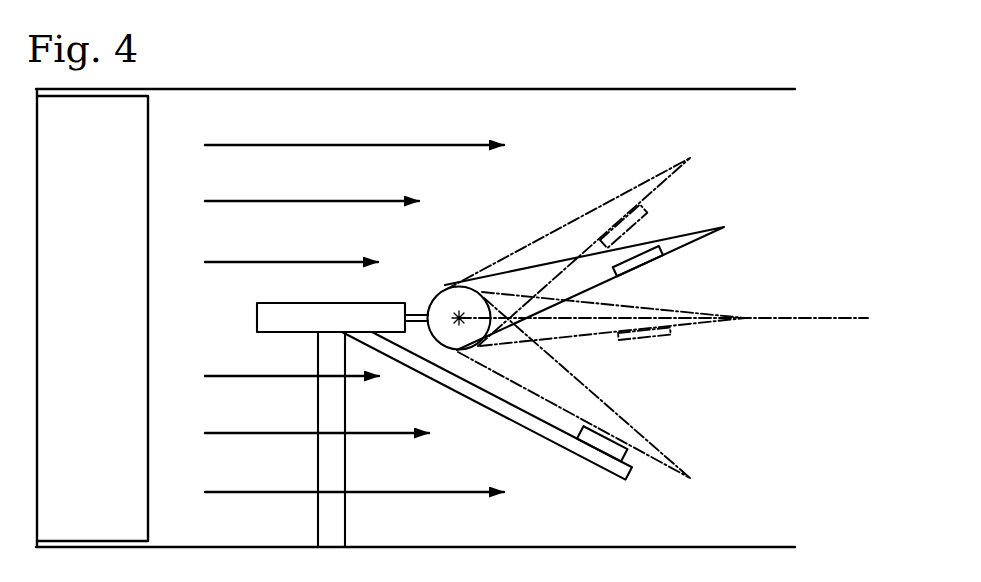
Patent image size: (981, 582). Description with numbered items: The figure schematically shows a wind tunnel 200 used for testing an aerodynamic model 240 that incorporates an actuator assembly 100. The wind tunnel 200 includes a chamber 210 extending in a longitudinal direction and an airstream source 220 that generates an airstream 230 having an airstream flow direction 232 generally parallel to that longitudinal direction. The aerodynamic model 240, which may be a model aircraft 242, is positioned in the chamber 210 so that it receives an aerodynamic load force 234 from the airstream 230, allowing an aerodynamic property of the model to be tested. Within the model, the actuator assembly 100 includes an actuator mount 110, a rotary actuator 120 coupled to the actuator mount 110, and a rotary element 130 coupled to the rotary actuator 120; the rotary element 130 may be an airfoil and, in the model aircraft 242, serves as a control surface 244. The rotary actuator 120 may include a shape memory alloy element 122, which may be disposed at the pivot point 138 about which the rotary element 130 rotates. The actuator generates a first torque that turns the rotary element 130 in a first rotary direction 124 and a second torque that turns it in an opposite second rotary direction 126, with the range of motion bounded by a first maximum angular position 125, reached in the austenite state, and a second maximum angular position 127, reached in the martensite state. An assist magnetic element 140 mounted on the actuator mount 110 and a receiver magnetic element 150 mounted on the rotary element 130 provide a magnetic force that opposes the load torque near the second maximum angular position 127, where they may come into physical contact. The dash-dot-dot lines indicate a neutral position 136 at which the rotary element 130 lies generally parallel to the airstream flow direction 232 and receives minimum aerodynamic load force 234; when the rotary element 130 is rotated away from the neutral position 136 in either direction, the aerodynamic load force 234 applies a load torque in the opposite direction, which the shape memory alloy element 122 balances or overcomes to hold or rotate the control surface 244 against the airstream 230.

The actuator assembly 100 is at (534, 217).
The actuator mount 110 is at (304, 303).
The rotary actuator 120 is at (433, 343).
The shape memory alloy element 122 is at (428, 333).
The first rotary direction 124 is at (664, 214).
The first maximum angular position 125 is at (686, 158).
The second rotary direction 126 is at (684, 276).
The second maximum angular position 127 is at (686, 479).
The rotary element 130 is at (650, 243).
The neutral position 136 is at (705, 317).
The pivot point 138 is at (456, 314).
The assist magnetic element 140 is at (632, 474).
The receiver magnetic element 150 is at (640, 274).
The wind tunnel 200 is at (233, 86).
The chamber 210 is at (311, 108).
The airstream source 220 is at (150, 123).
The airstream 230 is at (273, 150).
The airstream flow direction 232 is at (363, 200).
The aerodynamic load force 234 is at (715, 256).
The aerodynamic model 240 is at (614, 123).
The model aircraft 242 is at (607, 150).
The control surface 244 is at (638, 243).